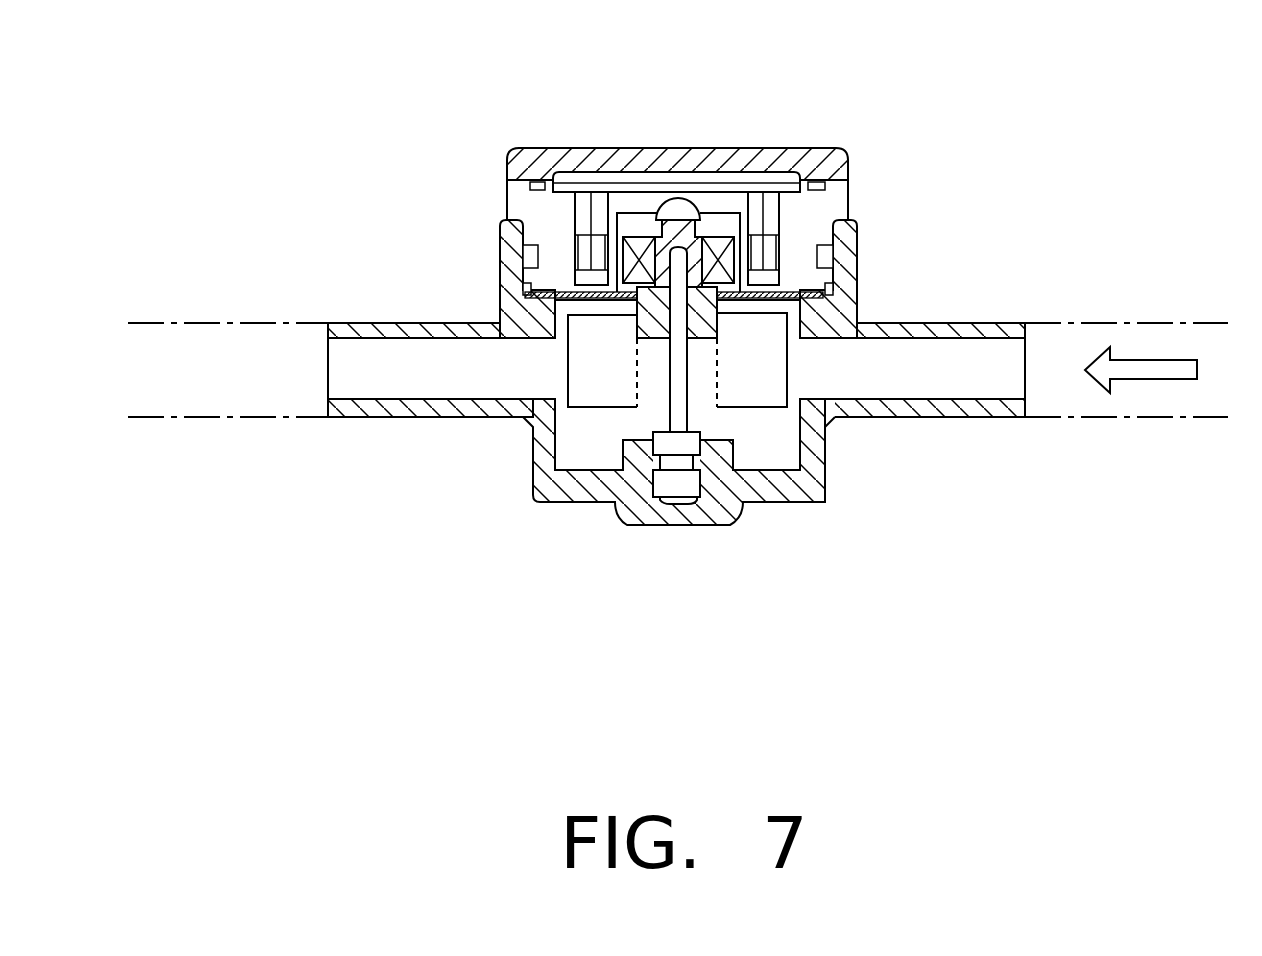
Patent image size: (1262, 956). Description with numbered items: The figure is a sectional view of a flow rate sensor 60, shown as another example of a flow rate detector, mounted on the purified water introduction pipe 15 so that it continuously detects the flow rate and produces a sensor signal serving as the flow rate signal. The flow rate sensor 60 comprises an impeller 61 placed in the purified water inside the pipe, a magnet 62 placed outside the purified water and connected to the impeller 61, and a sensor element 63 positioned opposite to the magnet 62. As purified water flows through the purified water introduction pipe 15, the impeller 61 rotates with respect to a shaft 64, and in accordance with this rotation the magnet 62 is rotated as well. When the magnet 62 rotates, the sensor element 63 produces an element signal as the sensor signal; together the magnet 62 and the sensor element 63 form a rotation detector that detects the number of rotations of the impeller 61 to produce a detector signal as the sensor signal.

The purified water introduction pipe 15 is at (1150, 322).
The flow rate sensor 60 is at (910, 277).
The impeller 61 is at (770, 400).
The magnet 62 is at (717, 240).
The sensor element 63 is at (780, 218).
The shaft 64 is at (678, 383).